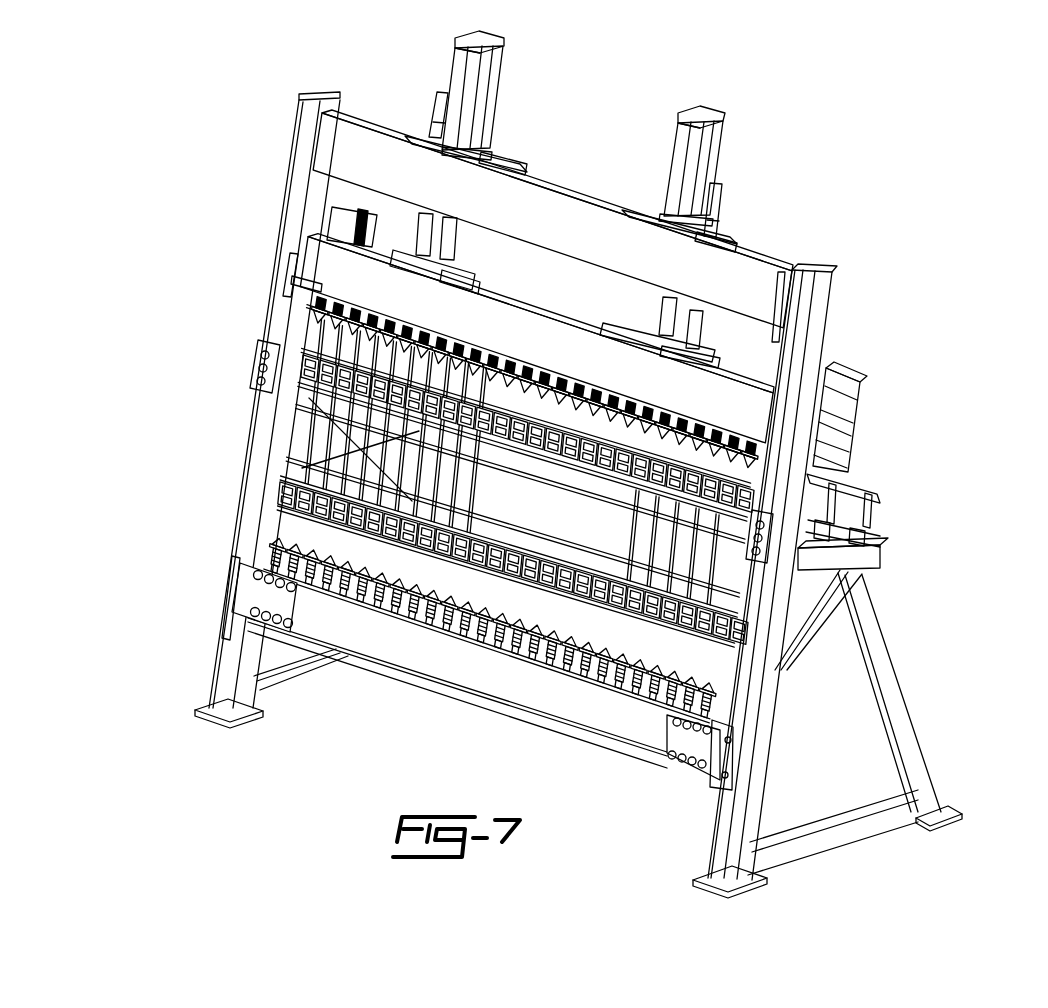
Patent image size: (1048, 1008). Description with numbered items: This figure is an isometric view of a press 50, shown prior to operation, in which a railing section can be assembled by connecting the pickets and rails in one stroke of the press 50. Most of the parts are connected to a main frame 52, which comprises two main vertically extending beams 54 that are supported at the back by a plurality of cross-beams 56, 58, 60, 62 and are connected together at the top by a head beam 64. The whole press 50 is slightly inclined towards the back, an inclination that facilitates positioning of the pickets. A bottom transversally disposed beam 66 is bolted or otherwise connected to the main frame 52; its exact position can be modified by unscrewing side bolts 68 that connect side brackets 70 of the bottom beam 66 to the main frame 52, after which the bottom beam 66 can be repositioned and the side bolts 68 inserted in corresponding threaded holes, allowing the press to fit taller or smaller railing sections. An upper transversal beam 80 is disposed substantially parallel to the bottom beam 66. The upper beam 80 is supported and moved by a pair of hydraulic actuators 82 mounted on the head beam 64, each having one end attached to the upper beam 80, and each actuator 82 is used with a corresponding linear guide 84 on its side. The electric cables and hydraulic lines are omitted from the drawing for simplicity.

The press 50 is at (564, 464).
The main frame 52 is at (564, 495).
The main vertically extending beams 54 is at (250, 503).
The cross-beam 56 is at (291, 681).
The cross-beam 58 is at (904, 738).
The cross-beam 60 is at (810, 620).
The cross-beam 62 is at (860, 557).
The head beam 64 is at (773, 262).
The bottom transversally disposed beam 66 is at (528, 710).
The side bolts 68 is at (248, 607).
The side brackets 70 is at (253, 600).
The upper transversal beam 80 is at (537, 312).
The hydraulic actuators 82 is at (497, 80).
The linear guide 84 is at (440, 110).